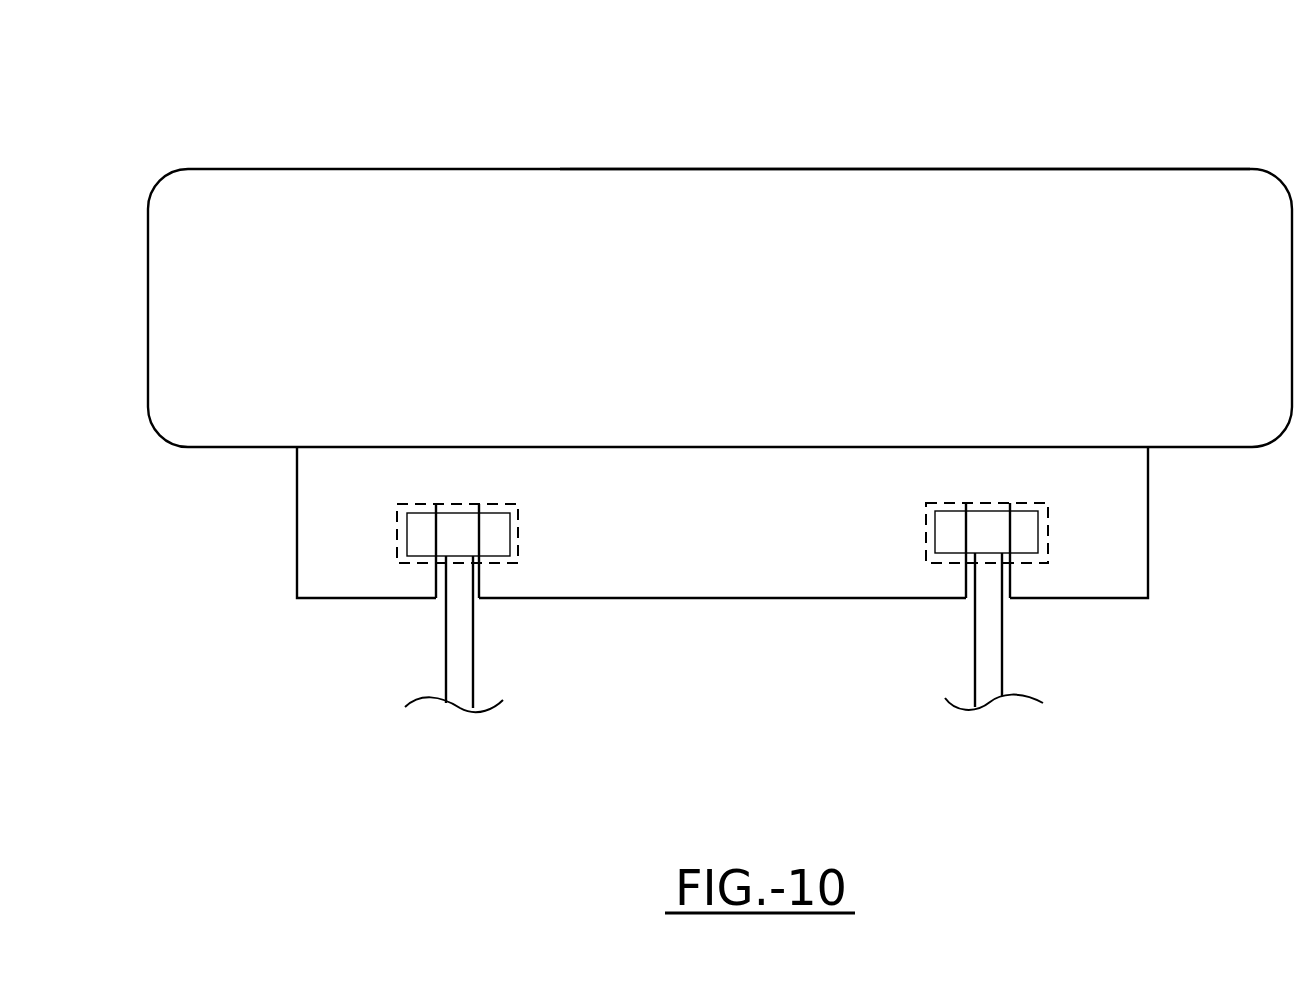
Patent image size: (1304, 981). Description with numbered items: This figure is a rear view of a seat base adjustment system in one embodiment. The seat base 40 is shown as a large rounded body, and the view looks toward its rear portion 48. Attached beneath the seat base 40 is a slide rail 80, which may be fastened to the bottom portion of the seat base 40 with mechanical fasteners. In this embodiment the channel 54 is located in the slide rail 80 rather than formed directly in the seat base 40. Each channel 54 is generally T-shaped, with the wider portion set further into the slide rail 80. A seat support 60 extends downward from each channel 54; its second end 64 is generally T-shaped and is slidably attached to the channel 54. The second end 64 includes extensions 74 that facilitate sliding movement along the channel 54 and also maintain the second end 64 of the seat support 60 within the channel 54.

The seat base 40 is at (300, 152).
The rear portion 48 is at (1123, 203).
The slide rail 80 is at (272, 523).
The channel 54 is at (466, 476).
The extensions 74 is at (418, 525).
The second end 64 is at (422, 622).
The seat support 60 is at (462, 668).